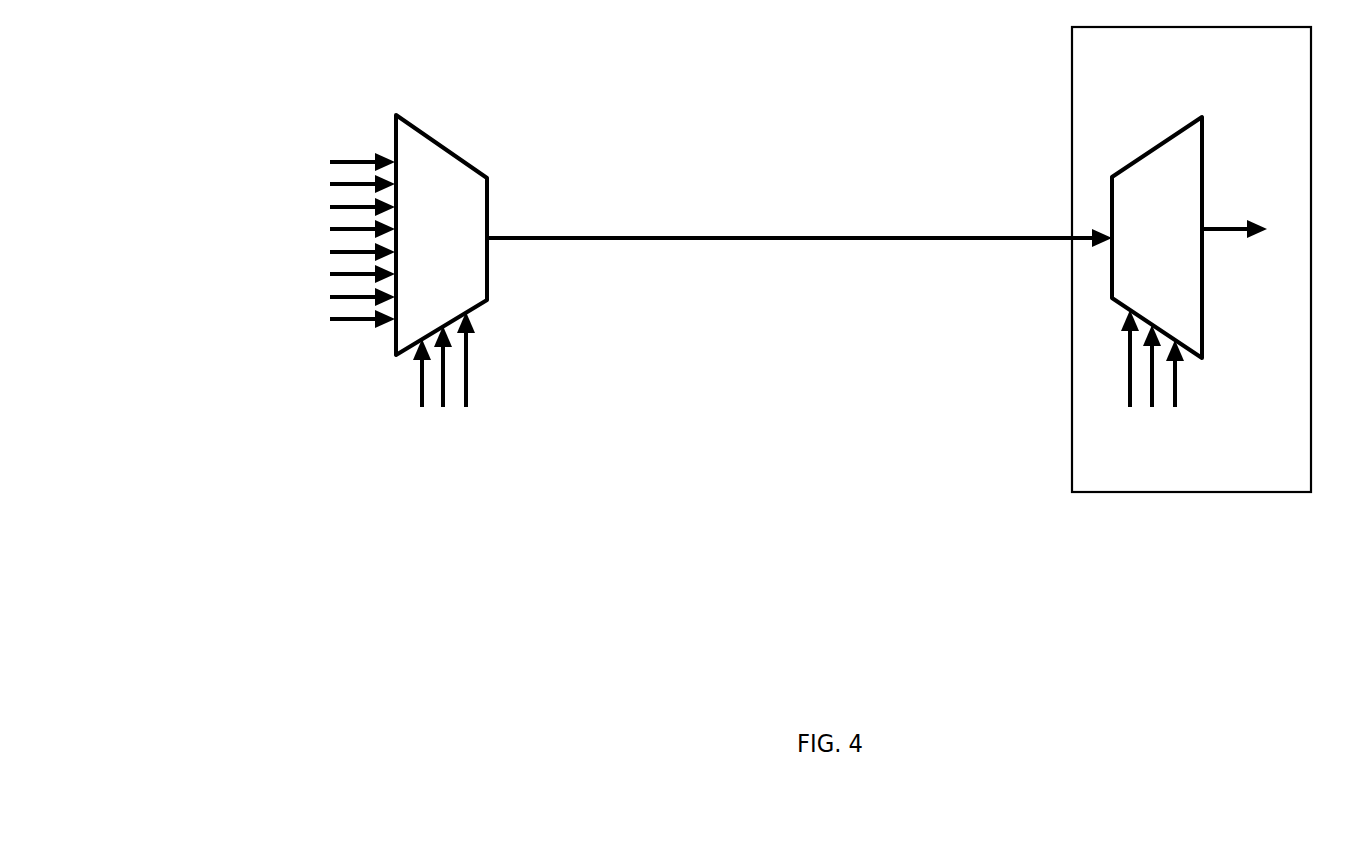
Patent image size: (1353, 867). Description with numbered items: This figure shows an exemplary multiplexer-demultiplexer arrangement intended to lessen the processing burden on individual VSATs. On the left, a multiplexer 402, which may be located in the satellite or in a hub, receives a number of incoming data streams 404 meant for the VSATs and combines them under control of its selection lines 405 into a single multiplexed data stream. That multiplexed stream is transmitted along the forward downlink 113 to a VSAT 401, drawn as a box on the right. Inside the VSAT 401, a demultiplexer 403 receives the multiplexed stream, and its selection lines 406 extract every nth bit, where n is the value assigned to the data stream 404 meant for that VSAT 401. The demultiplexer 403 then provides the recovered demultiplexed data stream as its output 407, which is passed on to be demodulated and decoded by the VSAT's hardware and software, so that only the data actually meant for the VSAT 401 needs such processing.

The VSAT 401 is at (1118, 493).
The multiplexer 402 is at (399, 330).
The demultiplexer 403 is at (1203, 330).
The data streams 404 is at (330, 319).
The selection lines 405 is at (466, 407).
The selection lines 406 is at (1175, 407).
The output signal 407 is at (1232, 233).
The forward downlink 113 is at (802, 240).